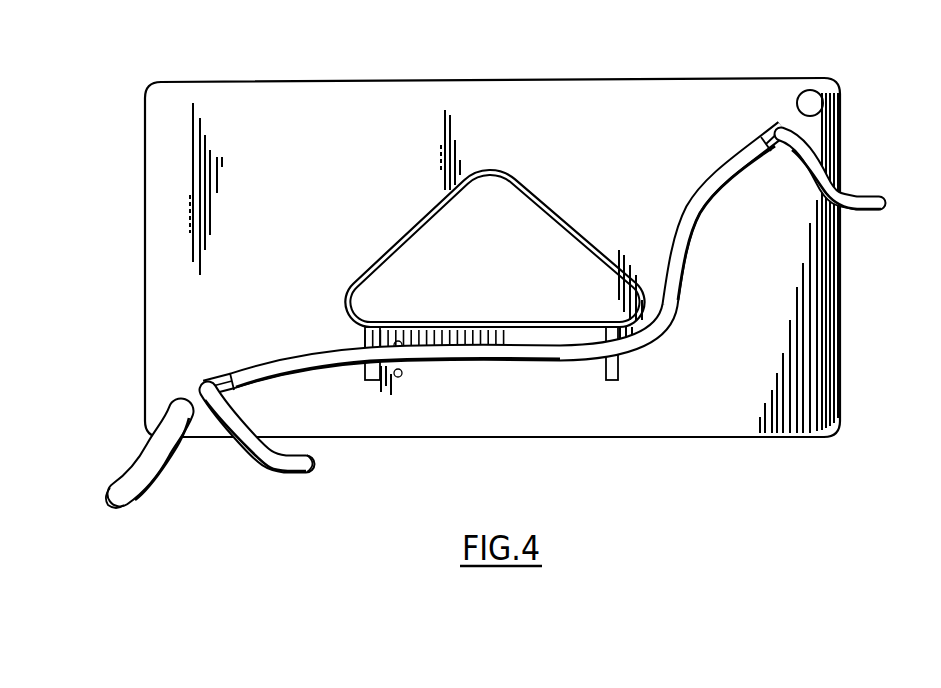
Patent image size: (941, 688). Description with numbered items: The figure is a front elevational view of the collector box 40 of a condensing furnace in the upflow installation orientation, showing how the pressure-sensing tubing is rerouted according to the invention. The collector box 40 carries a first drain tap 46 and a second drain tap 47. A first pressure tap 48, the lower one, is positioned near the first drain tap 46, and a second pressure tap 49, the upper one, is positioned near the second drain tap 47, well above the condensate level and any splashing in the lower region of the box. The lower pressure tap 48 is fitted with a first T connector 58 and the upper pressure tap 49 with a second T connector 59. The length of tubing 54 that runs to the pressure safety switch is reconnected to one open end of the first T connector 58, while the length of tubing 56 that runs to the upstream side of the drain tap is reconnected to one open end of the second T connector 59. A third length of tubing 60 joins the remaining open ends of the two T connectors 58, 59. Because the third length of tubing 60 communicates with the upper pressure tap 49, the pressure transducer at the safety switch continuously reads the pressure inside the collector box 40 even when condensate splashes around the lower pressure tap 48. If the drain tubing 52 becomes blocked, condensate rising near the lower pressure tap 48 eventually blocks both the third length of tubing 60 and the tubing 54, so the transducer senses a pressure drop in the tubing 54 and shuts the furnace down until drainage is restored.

The collector box 40 is at (598, 156).
The first drain tap 46 is at (184, 400).
The second drain tap 47 is at (812, 101).
The first pressure tap 48 is at (198, 402).
The second pressure tap 49 is at (778, 123).
The drain tubing 52 is at (138, 500).
The length of tubing 54 is at (290, 474).
The length of tubing 56 is at (866, 207).
The first T connector 58 is at (229, 374).
The second T connector 59 is at (775, 147).
The third length of tubing 60 is at (664, 333).